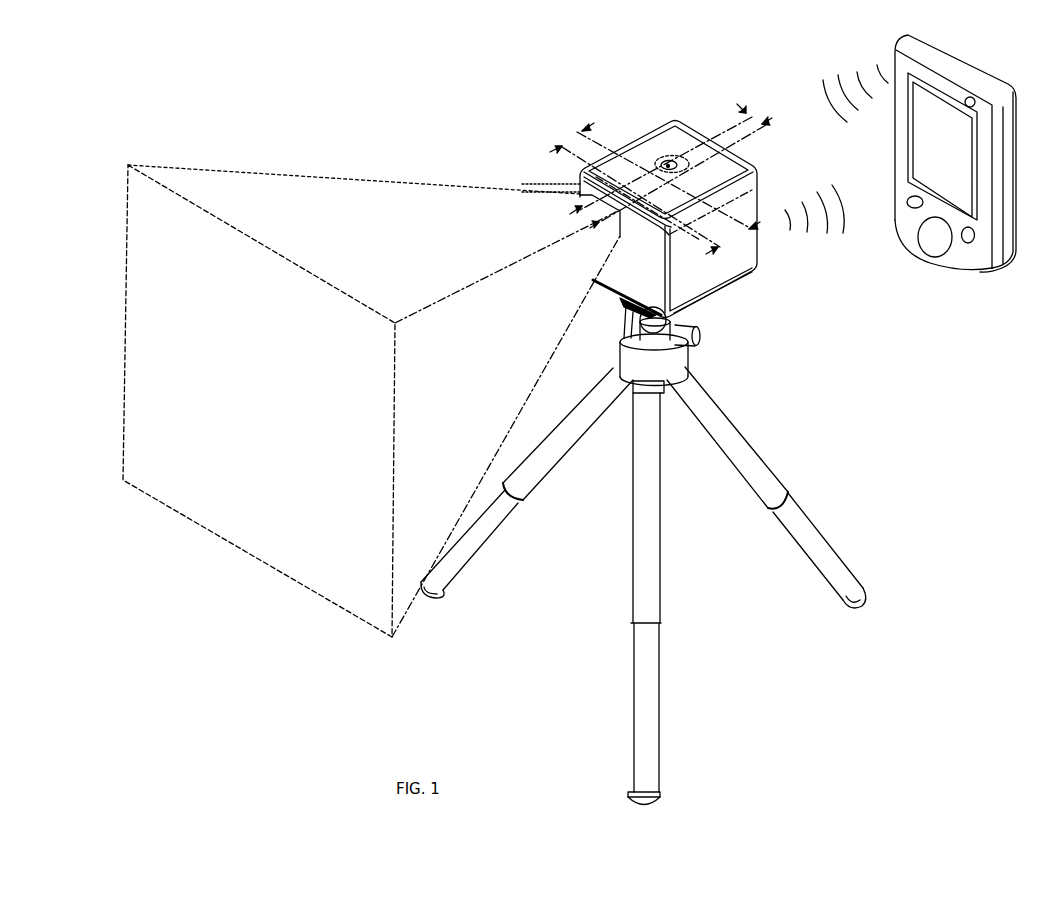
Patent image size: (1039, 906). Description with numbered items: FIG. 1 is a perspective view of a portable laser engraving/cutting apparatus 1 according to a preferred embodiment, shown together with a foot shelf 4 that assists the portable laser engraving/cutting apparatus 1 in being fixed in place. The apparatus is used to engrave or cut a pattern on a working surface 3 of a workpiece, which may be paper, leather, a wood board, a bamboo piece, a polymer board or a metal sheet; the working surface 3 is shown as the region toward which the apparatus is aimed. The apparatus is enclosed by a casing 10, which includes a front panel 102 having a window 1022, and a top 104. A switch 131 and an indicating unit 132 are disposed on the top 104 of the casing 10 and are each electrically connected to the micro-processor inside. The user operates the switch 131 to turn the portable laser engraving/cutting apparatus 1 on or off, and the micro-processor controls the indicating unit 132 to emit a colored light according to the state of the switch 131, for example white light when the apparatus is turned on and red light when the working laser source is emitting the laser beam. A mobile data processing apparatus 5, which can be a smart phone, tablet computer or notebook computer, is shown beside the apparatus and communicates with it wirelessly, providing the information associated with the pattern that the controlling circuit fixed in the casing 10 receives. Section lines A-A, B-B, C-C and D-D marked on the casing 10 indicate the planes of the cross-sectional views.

The portable laser engraving/cutting apparatus 1 is at (673, 92).
The working surface 3 is at (178, 192).
The foot shelf 4 is at (745, 455).
The mobile data processing apparatus 5 is at (970, 65).
The casing 10 is at (757, 200).
The front panel 102 is at (648, 288).
The top 104 is at (723, 163).
The switch 131 is at (681, 161).
The indicating unit 132 is at (667, 165).
The window 1022 is at (581, 184).